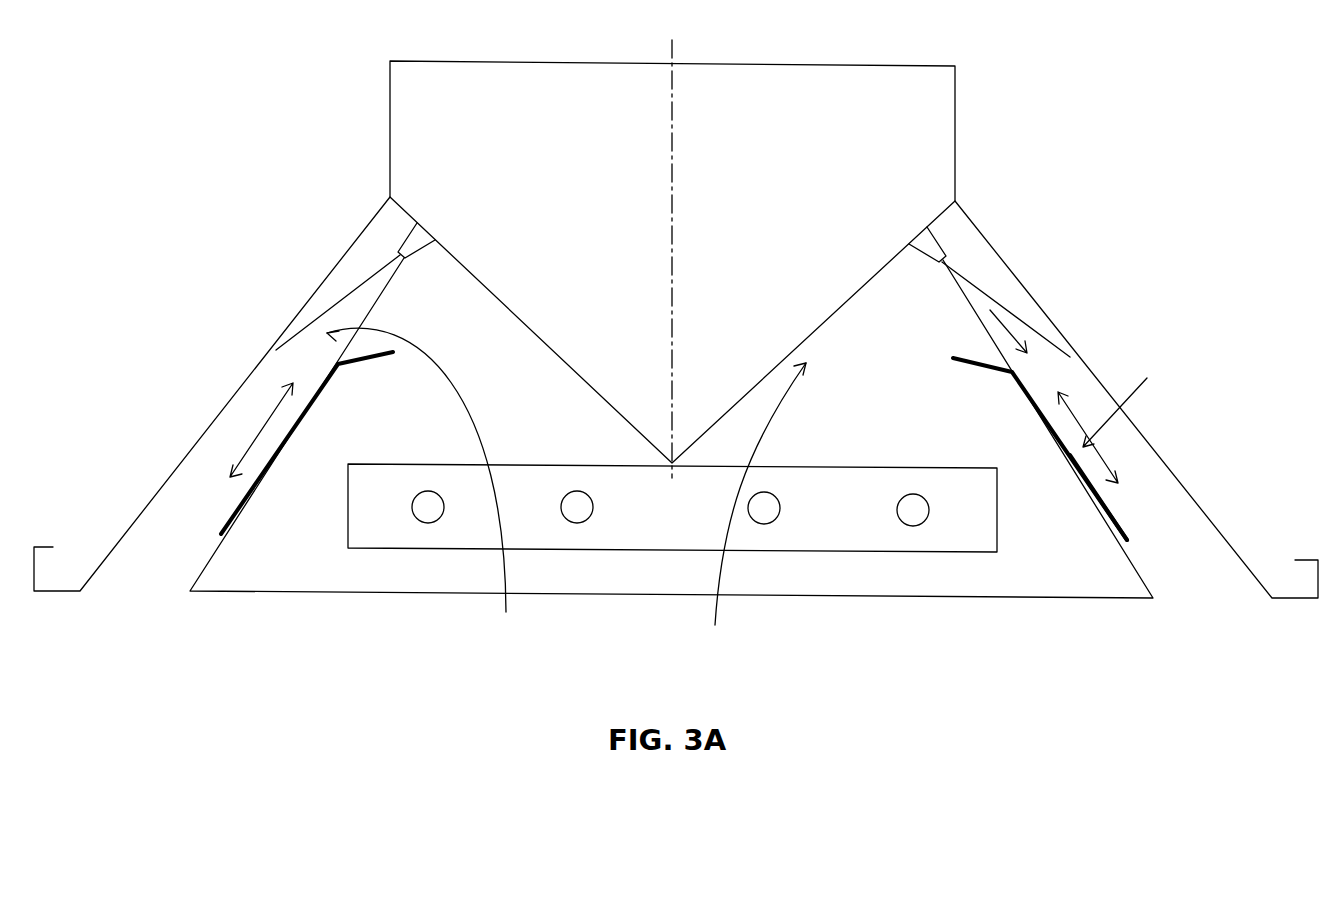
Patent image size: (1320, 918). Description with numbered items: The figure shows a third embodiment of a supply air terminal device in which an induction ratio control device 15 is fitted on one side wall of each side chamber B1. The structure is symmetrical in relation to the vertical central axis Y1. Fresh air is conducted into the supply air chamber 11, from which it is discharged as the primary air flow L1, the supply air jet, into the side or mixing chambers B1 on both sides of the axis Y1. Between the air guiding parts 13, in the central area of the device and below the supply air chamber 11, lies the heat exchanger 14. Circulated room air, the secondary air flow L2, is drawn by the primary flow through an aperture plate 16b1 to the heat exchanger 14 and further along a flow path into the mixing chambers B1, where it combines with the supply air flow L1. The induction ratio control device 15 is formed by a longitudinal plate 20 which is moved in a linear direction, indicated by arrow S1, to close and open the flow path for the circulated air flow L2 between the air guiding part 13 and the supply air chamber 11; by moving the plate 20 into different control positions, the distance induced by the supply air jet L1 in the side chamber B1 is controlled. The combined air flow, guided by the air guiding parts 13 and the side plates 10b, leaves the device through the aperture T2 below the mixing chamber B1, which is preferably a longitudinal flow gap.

The side plate 10b is at (200, 433).
The supply air chamber 11 is at (863, 186).
The air guiding part 13 is at (1112, 531).
The heat exchanger 14 is at (525, 466).
The induction ratio control device 15 is at (1178, 359).
The aperture plate 16b1 is at (480, 588).
The longitudinal plate 20 is at (323, 385).
The side chamber B1 is at (906, 423).
The primary air flow L1 is at (1010, 328).
The circulated air flow L2 is at (447, 348).
The arrow S1 is at (256, 437).
The aperture T2 is at (157, 593).
The vertical central axis Y1 is at (676, 150).